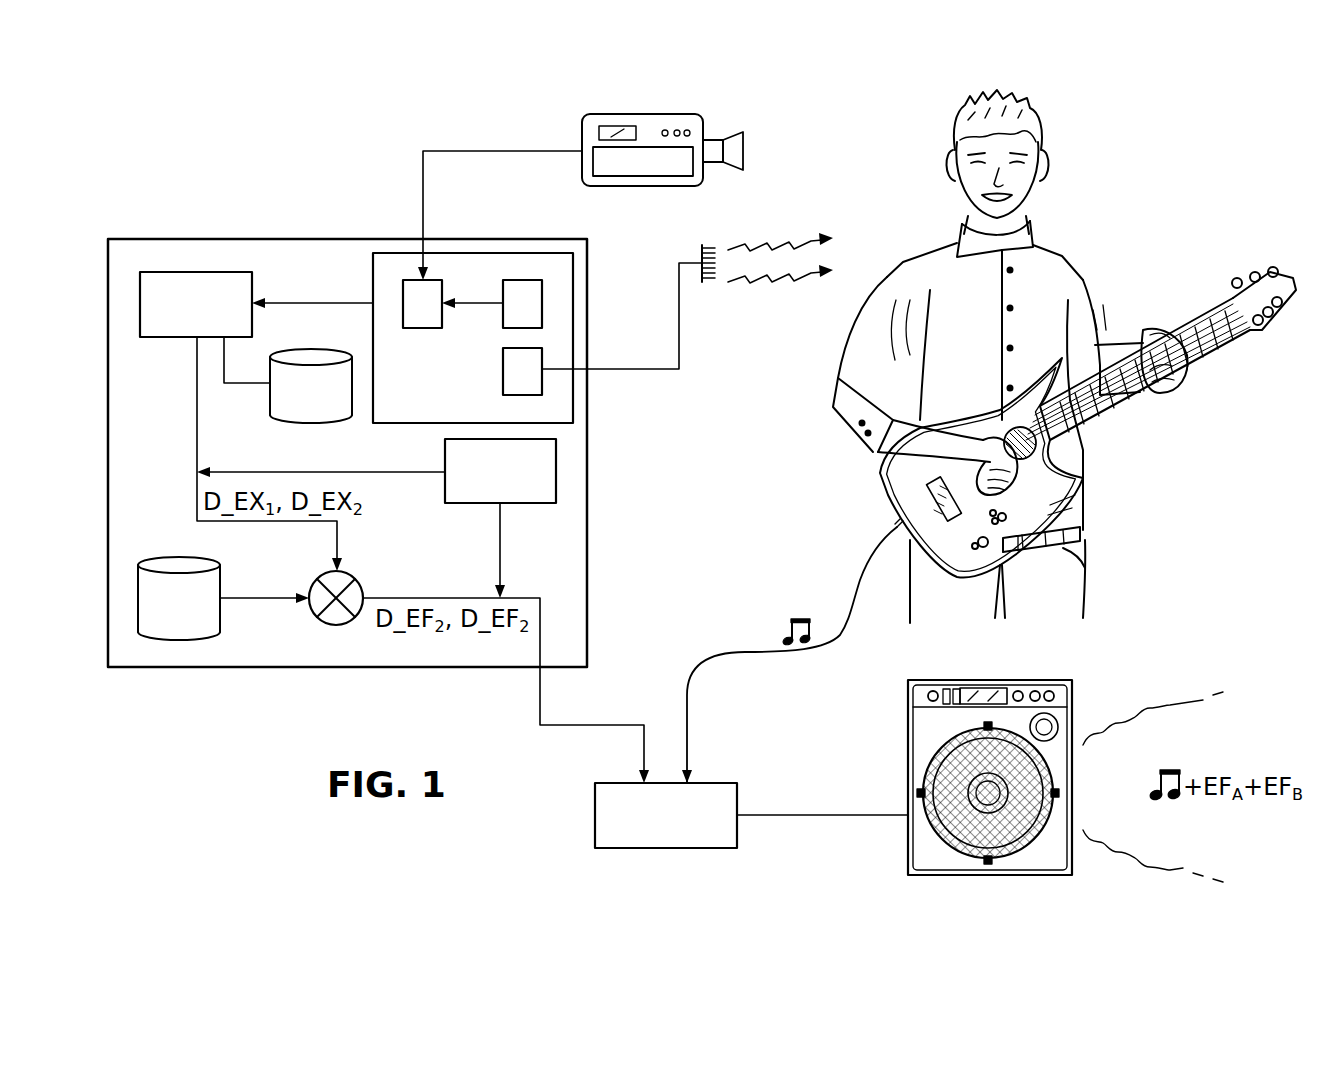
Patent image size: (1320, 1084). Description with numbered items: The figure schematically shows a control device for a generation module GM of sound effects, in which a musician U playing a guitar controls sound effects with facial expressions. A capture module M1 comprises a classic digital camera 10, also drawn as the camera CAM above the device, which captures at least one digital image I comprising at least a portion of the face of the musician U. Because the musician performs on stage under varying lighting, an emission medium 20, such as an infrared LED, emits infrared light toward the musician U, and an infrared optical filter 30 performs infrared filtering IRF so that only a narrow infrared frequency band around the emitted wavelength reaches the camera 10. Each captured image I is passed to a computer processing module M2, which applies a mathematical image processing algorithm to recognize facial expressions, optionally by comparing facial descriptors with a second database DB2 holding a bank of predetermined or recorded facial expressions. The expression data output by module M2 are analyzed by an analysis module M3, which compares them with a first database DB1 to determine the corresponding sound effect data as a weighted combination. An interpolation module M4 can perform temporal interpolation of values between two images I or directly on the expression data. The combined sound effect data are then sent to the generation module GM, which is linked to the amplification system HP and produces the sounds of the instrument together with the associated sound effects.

The digital camera 10 is at (422, 304).
The emission medium 20 is at (522, 371).
The infrared optical filter 30 is at (522, 304).
The capture module M1 is at (373, 272).
The computer processing module M2 is at (156, 338).
The analysis module M3 is at (351, 576).
The interpolation module M4 is at (530, 504).
The first database DB1 is at (157, 559).
The second database DB2 is at (290, 423).
The infrared filtering IRF is at (506, 256).
The generation module of sound effects GM is at (666, 815).
The amplification system HP is at (906, 713).
The digital image I is at (312, 293).
The musician U is at (1088, 165).
The camera CAM is at (662, 150).